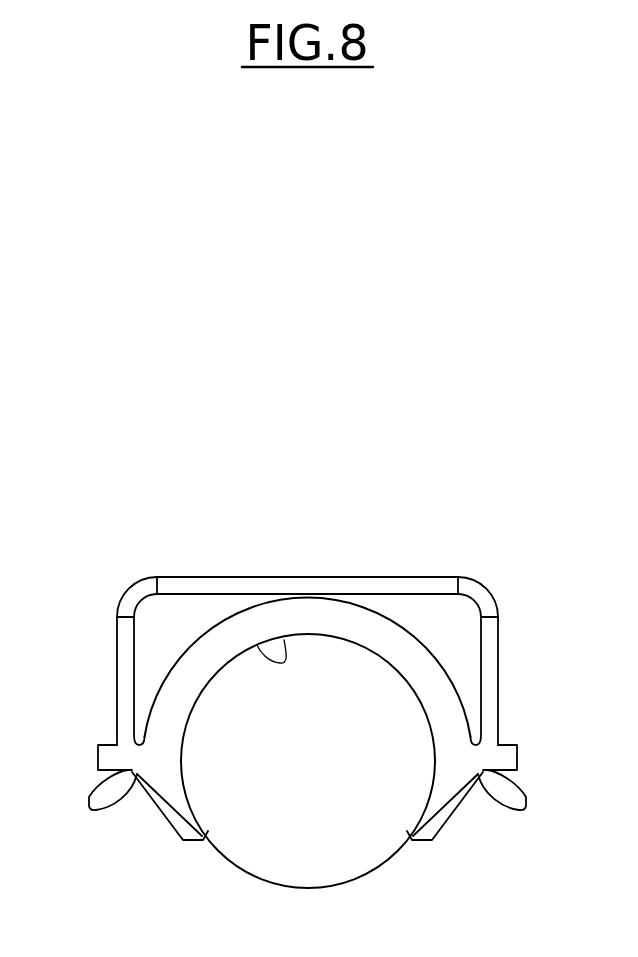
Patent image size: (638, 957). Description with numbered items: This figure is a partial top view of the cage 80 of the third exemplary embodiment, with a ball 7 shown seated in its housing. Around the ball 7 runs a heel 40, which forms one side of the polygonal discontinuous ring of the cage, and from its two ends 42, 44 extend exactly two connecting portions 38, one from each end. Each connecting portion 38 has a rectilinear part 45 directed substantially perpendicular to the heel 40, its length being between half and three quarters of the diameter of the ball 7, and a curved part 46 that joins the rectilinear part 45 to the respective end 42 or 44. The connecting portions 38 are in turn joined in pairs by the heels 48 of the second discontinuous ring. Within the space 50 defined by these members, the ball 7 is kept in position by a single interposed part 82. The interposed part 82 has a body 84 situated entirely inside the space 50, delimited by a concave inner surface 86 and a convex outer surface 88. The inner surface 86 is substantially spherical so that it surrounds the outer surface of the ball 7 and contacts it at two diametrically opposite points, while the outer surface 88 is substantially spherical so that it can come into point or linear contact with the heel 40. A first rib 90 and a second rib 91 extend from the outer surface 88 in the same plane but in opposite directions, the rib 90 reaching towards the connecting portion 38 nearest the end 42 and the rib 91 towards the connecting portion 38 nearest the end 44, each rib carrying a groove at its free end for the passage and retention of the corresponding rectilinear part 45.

The ball 7 is at (298, 880).
The connecting portion 38 is at (106, 693).
The heel 40 is at (350, 582).
The end 42 is at (173, 581).
The end 44 is at (450, 581).
The rectilinear part 45 is at (490, 683).
The curved part 46 is at (488, 600).
The heel 48 is at (76, 803).
The space 50 is at (160, 617).
The cage 80 is at (502, 856).
The interposed part 82 is at (157, 824).
The body 84 is at (242, 632).
The inner surface 86 is at (284, 632).
The outer surface 88 is at (206, 631).
The first rib 90 is at (107, 755).
The second rib 91 is at (508, 755).